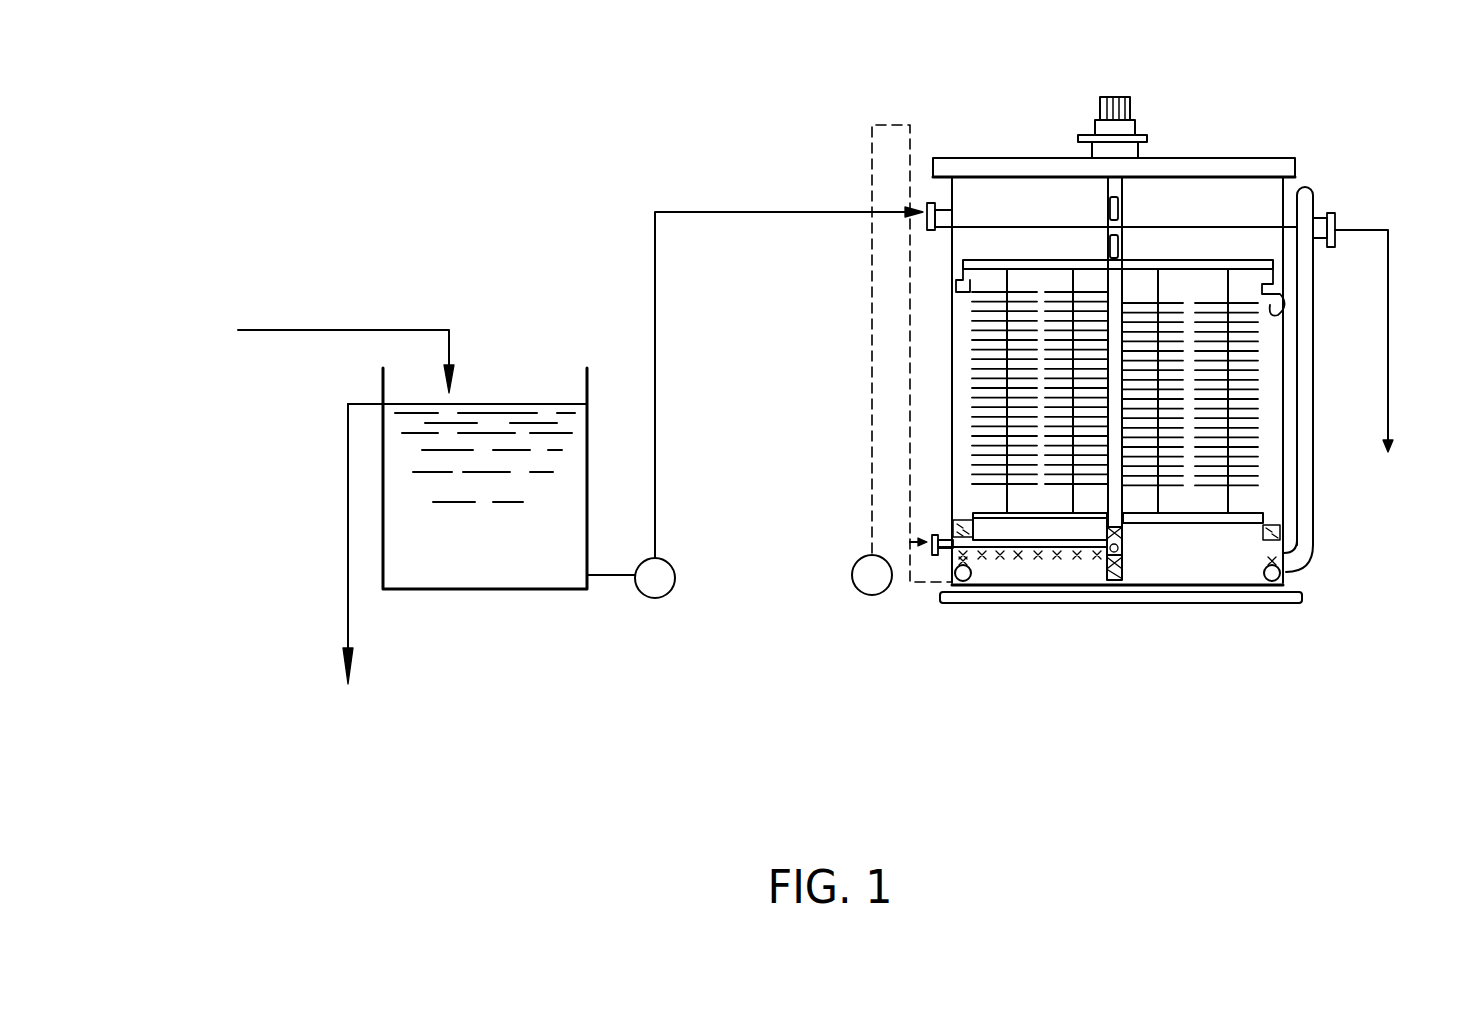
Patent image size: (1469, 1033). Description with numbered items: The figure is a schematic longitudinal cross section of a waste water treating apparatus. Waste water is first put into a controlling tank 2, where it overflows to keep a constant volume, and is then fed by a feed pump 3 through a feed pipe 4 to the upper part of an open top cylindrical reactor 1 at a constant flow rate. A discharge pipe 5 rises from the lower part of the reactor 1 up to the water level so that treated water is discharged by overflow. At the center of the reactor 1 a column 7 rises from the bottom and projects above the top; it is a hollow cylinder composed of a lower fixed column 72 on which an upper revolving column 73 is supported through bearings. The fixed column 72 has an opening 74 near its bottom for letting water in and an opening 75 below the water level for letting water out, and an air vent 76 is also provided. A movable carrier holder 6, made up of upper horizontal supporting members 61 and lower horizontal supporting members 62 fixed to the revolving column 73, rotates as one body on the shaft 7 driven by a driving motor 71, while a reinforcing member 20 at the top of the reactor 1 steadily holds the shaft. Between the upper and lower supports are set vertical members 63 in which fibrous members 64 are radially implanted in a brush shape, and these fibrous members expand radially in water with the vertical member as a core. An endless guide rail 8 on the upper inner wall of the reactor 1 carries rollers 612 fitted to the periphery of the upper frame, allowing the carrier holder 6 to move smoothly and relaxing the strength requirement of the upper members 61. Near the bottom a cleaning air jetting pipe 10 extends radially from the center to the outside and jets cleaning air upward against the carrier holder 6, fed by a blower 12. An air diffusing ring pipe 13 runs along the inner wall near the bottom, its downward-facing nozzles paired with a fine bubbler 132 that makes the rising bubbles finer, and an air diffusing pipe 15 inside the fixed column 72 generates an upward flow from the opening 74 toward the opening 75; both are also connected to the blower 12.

The open top cylindrical reactor 1 is at (940, 410).
The controlling tank 2 is at (517, 595).
The feed pump 3 is at (670, 597).
The feed pipe 4 is at (652, 298).
The discharge pipe 5 is at (1314, 350).
The movable carrier holder 6 is at (1053, 240).
The column 7 is at (1123, 210).
The endless guide rail 8 is at (955, 290).
The cleaning air jetting pipe 10 is at (947, 553).
The blower 12 is at (855, 562).
The air diffusing ring pipe 13 is at (963, 580).
The air diffusing pipe 15 is at (1123, 567).
The reinforcing member 20 is at (978, 165).
The upper horizontal supporting members 61 is at (1178, 260).
The lower horizontal supporting members 62 is at (1207, 527).
The vertical members 63 is at (1237, 384).
The fibrous members 64 is at (1237, 463).
The driving motor 71 is at (1140, 108).
The lower fixed column 72 is at (1105, 558).
The upper revolving column 73 is at (1112, 445).
The opening 74 is at (1120, 555).
The opening 75 is at (1108, 245).
The air vent 76 is at (1108, 205).
The fine bubbler 132 is at (1297, 537).
The rollers 612 is at (952, 265).